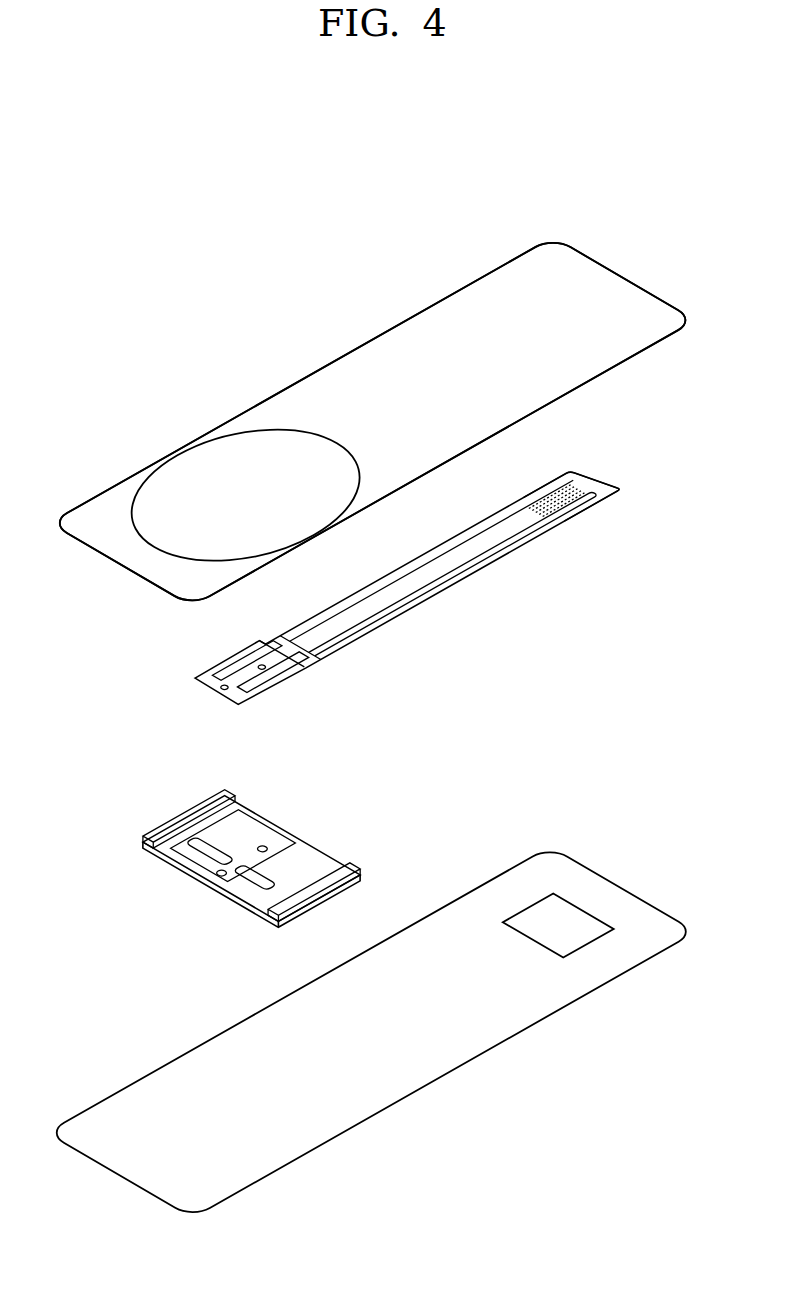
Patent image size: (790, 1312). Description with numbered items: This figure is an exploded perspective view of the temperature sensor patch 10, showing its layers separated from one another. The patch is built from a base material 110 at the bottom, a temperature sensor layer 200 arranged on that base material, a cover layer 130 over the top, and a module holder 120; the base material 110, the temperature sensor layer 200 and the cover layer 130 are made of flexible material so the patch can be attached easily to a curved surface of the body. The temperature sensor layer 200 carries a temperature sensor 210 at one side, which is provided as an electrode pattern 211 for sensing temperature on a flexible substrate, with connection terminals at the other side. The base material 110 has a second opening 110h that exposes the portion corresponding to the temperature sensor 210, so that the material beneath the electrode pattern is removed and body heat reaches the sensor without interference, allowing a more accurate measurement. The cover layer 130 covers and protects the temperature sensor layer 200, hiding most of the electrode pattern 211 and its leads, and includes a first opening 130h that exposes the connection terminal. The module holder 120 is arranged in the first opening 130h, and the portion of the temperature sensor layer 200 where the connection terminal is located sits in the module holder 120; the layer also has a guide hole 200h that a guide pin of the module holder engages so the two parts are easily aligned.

The temperature sensor patch 10 is at (611, 178).
The base material 110 is at (600, 898).
The second opening 110h is at (540, 935).
The module holder 120 is at (287, 846).
The cover layer 130 is at (613, 285).
The first opening 130h is at (272, 432).
The temperature sensor layer 200 is at (585, 484).
The guide hole 200h is at (212, 692).
The temperature sensor 210 is at (600, 516).
The electrode pattern 211 is at (568, 492).